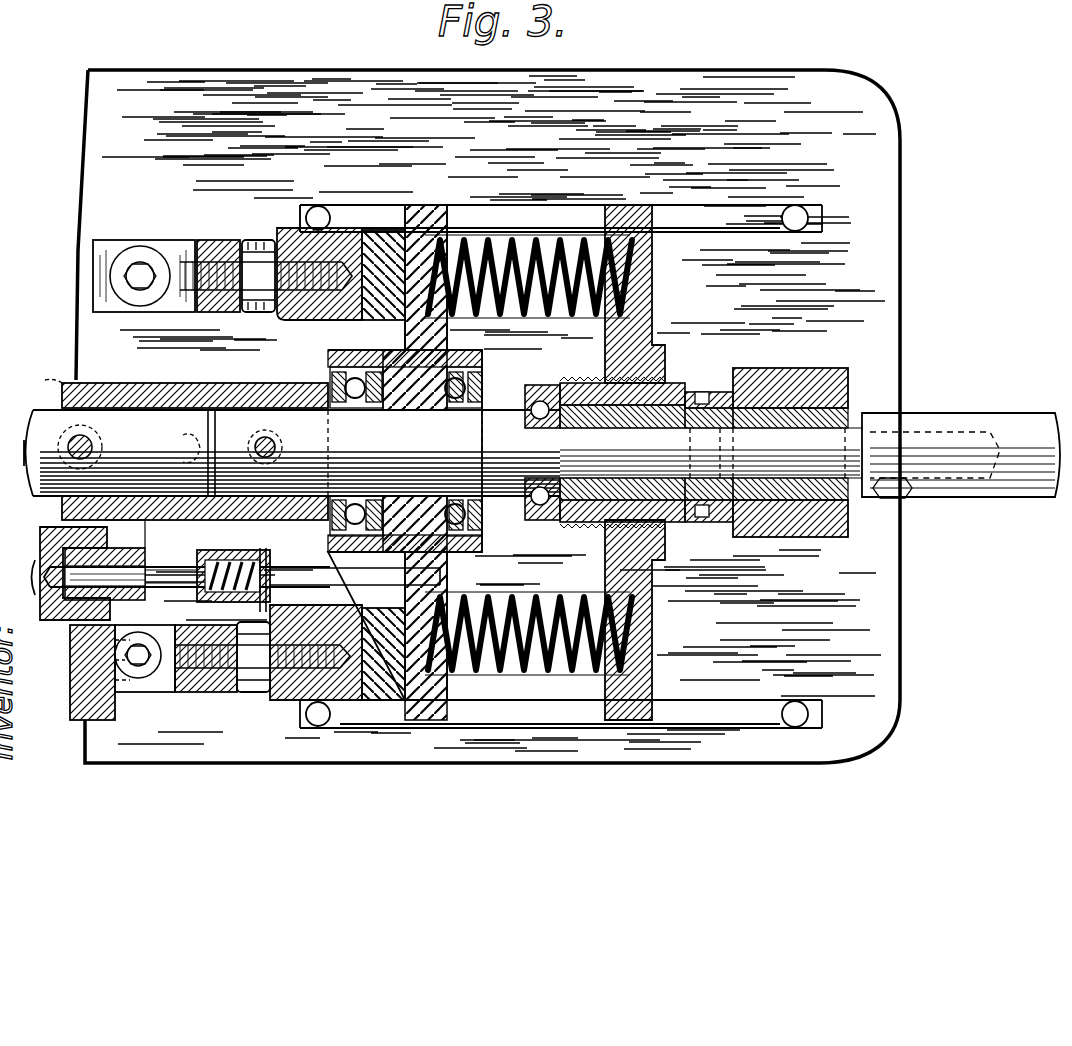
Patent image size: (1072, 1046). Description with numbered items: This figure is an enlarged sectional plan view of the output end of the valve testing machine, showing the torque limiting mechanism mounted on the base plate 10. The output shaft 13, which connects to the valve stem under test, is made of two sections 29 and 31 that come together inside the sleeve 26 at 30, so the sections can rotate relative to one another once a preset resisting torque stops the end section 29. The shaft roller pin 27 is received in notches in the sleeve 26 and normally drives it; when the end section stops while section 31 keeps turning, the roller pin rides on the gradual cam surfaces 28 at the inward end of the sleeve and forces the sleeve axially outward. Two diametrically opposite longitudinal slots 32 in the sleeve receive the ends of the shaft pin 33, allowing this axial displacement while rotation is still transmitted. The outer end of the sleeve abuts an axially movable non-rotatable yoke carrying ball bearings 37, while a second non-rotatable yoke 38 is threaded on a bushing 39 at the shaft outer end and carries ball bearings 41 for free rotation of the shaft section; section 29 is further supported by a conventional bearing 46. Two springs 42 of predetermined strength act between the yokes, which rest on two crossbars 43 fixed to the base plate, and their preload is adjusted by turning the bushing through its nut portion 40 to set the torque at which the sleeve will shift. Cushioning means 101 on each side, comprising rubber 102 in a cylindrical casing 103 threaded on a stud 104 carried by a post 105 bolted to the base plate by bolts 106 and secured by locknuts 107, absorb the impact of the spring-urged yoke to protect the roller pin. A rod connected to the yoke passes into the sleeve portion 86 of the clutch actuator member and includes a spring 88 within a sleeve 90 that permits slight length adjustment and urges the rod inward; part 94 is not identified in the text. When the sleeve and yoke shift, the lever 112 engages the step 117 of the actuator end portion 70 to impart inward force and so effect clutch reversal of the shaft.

The base plate 10 is at (888, 172).
The shaft 13 is at (36, 430).
The sleeve 26 is at (165, 383).
The shaft roller pin 27 is at (92, 445).
The cam surfaces 28 is at (45, 367).
The shaft section 29 is at (278, 412).
The junction of shaft sections 30 is at (214, 412).
The shaft section 31 is at (108, 412).
The longitudinal slots 32 is at (250, 438).
The shaft pin 33 is at (272, 445).
The ball bearings 37 is at (328, 372).
The yoke 38 is at (652, 375).
The bushing 39 is at (676, 385).
The nut portion 40 is at (718, 392).
The ball bearings 41 is at (540, 400).
The springs 42 is at (490, 238).
The crossbars 43 is at (708, 205).
The bearing 46 is at (790, 368).
The end portion of actuator member 70 is at (92, 720).
The sleeve portion 86 is at (140, 604).
The spring 88 is at (236, 560).
The sleeve 90 is at (263, 556).
The rod 94 is at (168, 568).
The cushioning means 101 is at (283, 220).
The rubber 102 is at (392, 230).
The cylindrical casing 103 is at (300, 210).
The studs 104 is at (222, 262).
The posts 105 is at (195, 240).
The bolts 106 is at (140, 262).
The locknuts 107 is at (255, 240).
The lever 112 is at (105, 548).
The step 117 is at (45, 527).